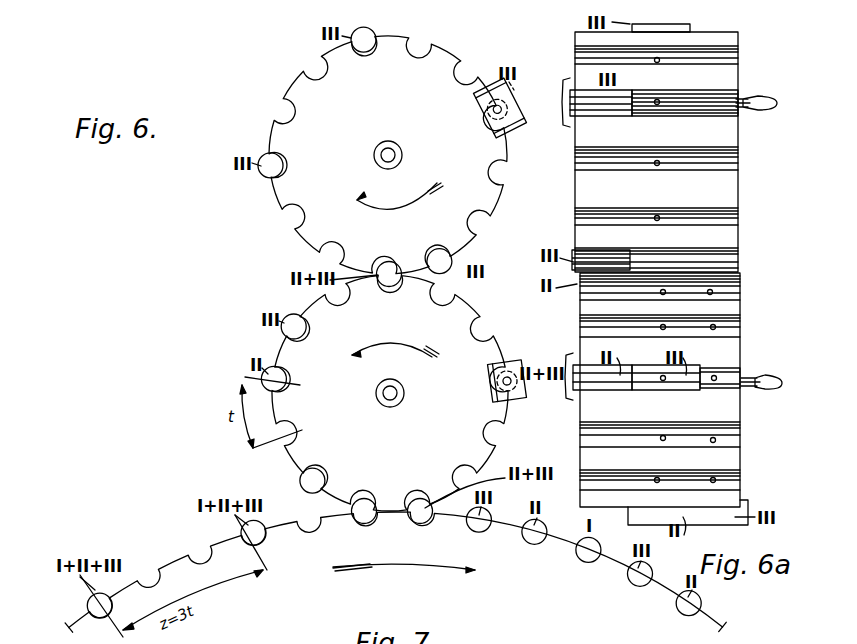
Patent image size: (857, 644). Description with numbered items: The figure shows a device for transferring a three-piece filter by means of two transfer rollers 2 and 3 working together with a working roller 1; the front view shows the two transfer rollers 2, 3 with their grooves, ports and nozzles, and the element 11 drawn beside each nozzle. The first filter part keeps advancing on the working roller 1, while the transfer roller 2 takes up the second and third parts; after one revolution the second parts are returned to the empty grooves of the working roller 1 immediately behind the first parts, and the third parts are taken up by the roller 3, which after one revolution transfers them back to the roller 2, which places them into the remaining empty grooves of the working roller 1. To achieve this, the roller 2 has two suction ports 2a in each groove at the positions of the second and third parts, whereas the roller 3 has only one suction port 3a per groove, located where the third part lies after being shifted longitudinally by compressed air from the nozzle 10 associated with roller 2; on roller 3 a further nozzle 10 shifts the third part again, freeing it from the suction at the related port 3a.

In FIG. 6, the working roller 1 is at (713, 617).
In FIG. 6, the transfer roller 2 is at (478, 319).
In FIG. 6A, the transfer roller 2 is at (728, 353).
In FIG. 6A, the suction ports 2a is at (712, 438).
In FIG. 6, the transfer roller 3 is at (508, 141).
In FIG. 6A, the transfer roller 3 is at (725, 195).
In FIG. 6A, the suction port 3a is at (657, 160).
In FIG. 6, the nozzle 10 is at (482, 105).
In FIG. 6A, the nozzle 10 is at (766, 99).
In FIG. 6, the plunger 11 is at (495, 128).
In FIG. 6A, the plunger 11 is at (565, 100).